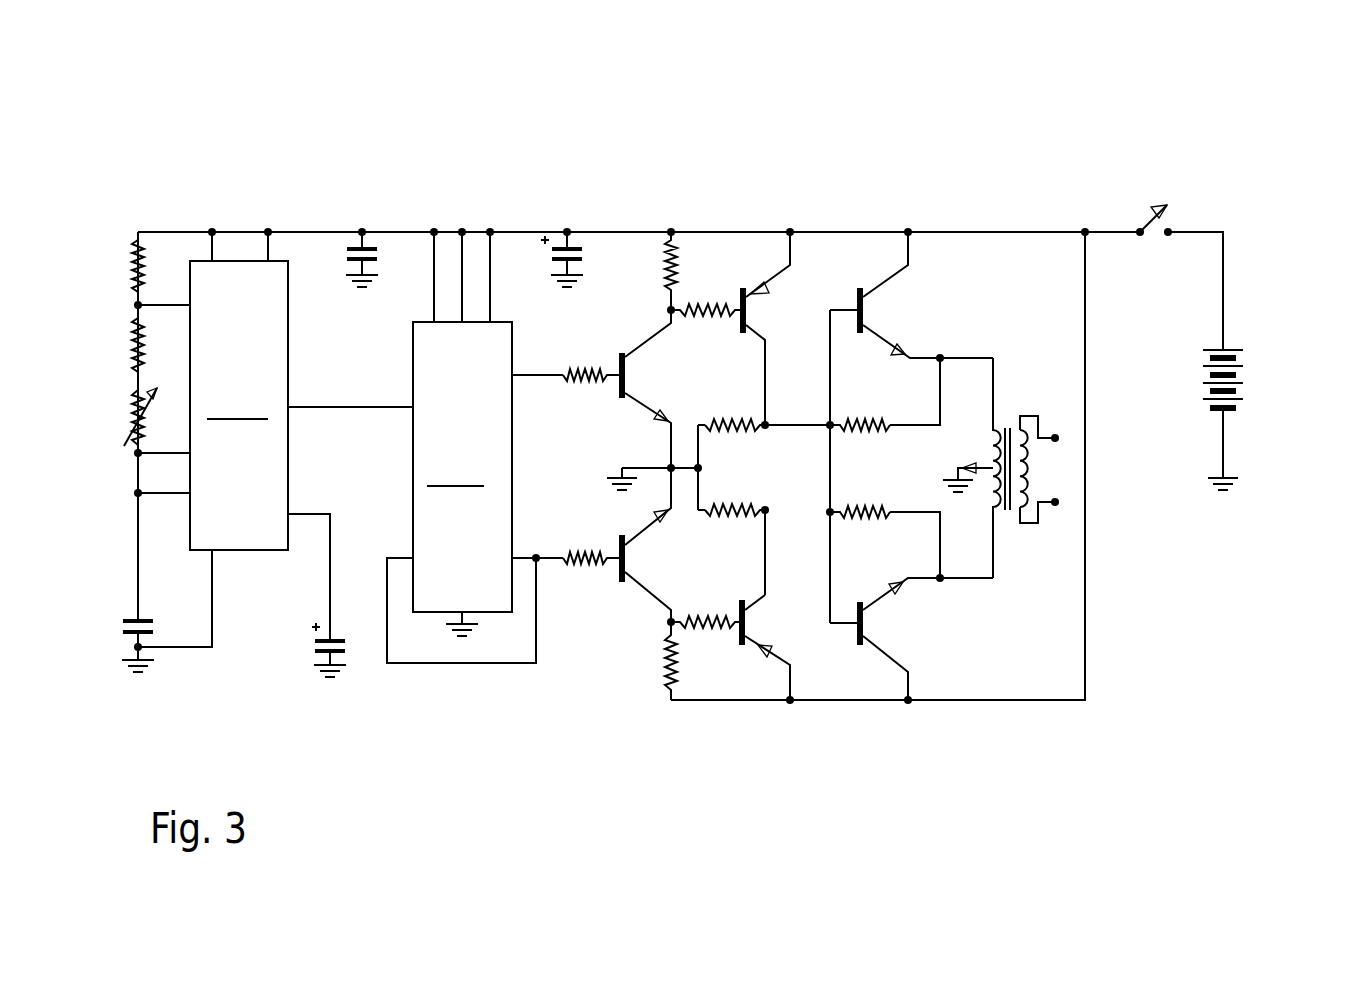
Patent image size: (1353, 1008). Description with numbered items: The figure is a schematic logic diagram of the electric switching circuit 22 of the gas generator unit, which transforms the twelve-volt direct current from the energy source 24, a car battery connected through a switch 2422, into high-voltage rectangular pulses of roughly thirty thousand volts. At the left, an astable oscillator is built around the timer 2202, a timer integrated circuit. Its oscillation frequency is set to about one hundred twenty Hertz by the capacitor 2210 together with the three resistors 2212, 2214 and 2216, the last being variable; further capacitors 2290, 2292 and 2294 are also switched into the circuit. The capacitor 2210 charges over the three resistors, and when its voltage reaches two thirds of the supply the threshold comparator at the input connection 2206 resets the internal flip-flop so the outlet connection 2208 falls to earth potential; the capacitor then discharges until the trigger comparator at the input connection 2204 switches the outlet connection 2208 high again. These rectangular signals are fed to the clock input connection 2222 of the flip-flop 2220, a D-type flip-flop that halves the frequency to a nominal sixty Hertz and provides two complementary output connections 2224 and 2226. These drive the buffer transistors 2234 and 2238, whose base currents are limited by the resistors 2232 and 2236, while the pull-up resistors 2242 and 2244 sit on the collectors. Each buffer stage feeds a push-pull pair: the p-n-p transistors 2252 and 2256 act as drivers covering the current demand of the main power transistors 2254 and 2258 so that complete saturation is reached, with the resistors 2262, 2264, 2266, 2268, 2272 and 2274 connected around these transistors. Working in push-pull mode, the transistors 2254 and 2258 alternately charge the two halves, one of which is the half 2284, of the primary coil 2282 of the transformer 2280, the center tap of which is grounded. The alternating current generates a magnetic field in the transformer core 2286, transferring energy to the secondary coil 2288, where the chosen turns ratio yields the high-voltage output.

The electric switching circuit 22 is at (600, 175).
The energy source 24 is at (1272, 238).
The timer 2202 is at (213, 439).
The input connection of the timer 2204 is at (187, 494).
The input connection of the timer 2206 is at (187, 455).
The outlet connection of the timer 2208 is at (290, 408).
The capacitor 2210 is at (125, 628).
The resistor 2212 is at (133, 272).
The resistor 2214 is at (133, 343).
The variable resistor 2216 is at (137, 411).
The flip-flop 2220 is at (463, 447).
The clock input connection of the flip-flop 2222 is at (410, 406).
The output connection of the flip-flop 2224 is at (513, 378).
The output connection of the flip-flop 2226 is at (515, 556).
The resistor 2232 is at (583, 368).
The buffer transistor 2234 is at (650, 383).
The resistor 2236 is at (590, 568).
The buffer transistor 2238 is at (630, 560).
The resistor 2242 is at (677, 270).
The resistor 2244 is at (680, 665).
The p-n-p transistor 2252 is at (752, 310).
The transistor 2254 is at (868, 310).
The p-n-p transistor 2256 is at (750, 622).
The transistor 2258 is at (870, 623).
The resistor 2262 is at (712, 322).
The resistor 2264 is at (690, 626).
The resistor 2266 is at (728, 432).
The resistor 2268 is at (732, 517).
The resistor 2272 is at (858, 418).
The resistor 2274 is at (867, 518).
The transformer 2280 is at (962, 463).
The primary coil 2282 is at (945, 465).
The half of the primary coil 2284 is at (990, 440).
The transformer core 2286 is at (1007, 512).
The secondary coil 2288 is at (1024, 500).
The capacitor 2290 is at (377, 253).
The capacitor 2292 is at (582, 253).
The capacitor 2294 is at (313, 647).
The switch 2422 is at (1150, 203).